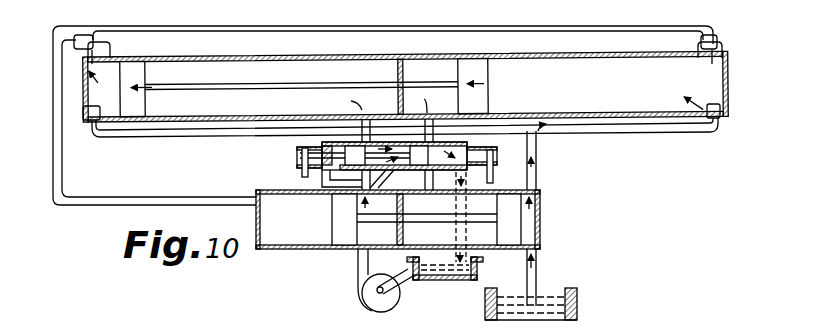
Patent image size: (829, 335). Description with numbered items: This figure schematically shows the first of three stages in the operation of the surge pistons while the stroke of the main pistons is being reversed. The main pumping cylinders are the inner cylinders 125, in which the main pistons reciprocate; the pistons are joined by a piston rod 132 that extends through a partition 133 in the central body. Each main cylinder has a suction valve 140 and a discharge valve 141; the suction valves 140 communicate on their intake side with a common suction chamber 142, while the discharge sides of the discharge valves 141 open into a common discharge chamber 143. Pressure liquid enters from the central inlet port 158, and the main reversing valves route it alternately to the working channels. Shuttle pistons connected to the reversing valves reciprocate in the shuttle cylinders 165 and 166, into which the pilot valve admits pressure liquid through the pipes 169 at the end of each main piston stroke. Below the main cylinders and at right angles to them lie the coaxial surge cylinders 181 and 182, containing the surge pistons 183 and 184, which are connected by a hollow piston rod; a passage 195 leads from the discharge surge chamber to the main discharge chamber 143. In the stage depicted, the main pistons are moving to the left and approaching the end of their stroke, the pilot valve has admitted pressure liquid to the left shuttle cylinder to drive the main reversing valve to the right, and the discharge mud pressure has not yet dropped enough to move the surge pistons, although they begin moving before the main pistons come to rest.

The inner cylinder 125 is at (406, 76).
The piston rod 132 is at (308, 83).
The partition 133 is at (406, 74).
The suction valve 140 is at (80, 111).
The discharge valve 141 is at (106, 50).
The suction chamber 142 is at (538, 153).
The discharge chamber 143 is at (74, 42).
The central inlet port 158 is at (362, 268).
The shuttle cylinder 165 is at (298, 152).
The shuttle cylinder 166 is at (490, 150).
The pipe 169 is at (301, 169).
The surge cylinder 181 is at (294, 250).
The surge cylinder 182 is at (504, 250).
The surge piston 183 is at (342, 233).
The surge piston 184 is at (512, 220).
The passage 195 is at (110, 203).